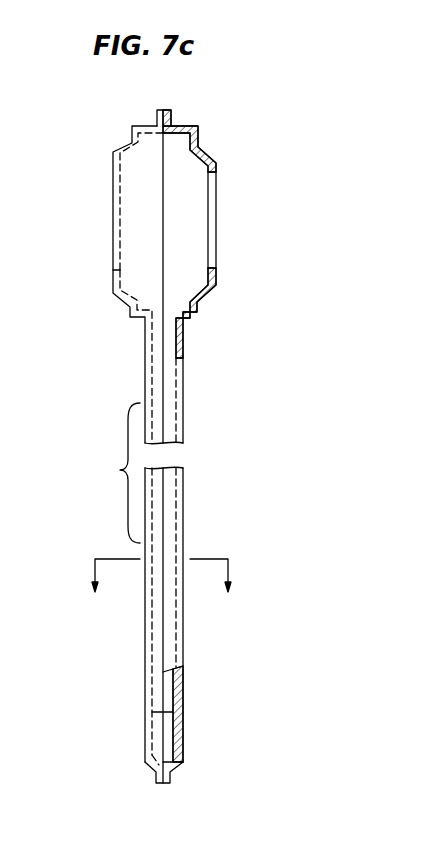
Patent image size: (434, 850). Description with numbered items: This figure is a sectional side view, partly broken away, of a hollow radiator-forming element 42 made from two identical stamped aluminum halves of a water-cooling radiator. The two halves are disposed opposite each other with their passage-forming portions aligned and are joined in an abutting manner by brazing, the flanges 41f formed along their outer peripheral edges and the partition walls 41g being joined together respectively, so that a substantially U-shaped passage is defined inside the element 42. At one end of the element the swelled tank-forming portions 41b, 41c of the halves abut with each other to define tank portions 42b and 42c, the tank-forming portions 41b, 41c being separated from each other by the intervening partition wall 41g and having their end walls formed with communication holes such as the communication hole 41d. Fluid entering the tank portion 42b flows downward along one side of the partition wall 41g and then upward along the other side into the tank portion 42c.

The tank-forming portion 41b is at (219, 141).
The tank-forming portion 41c is at (237, 123).
The communication hole 41d is at (216, 229).
The flange 41f is at (158, 110).
The partition wall 41g is at (168, 700).
The radiator-forming element 42 is at (143, 382).
The tank portion 42b is at (225, 313).
The tank portion 42c is at (198, 282).